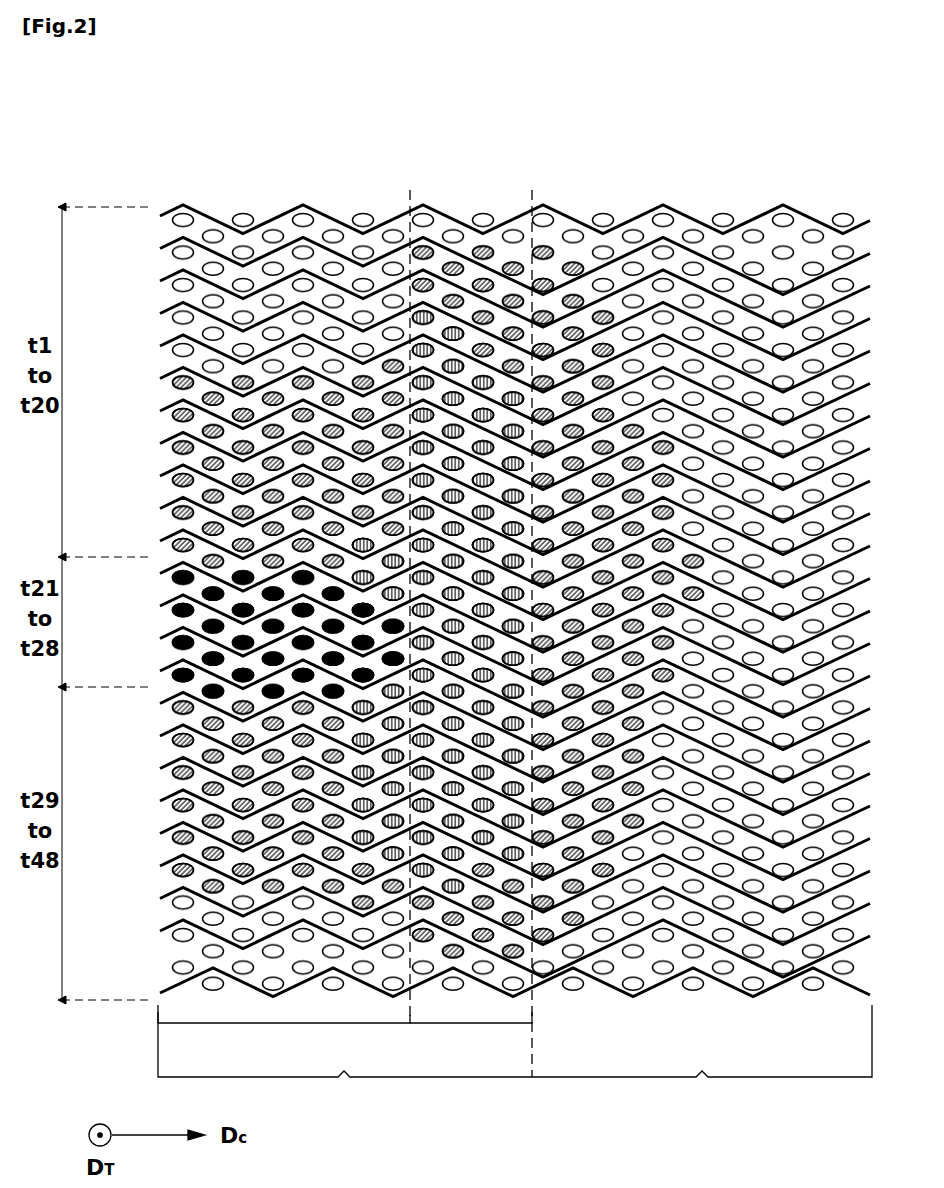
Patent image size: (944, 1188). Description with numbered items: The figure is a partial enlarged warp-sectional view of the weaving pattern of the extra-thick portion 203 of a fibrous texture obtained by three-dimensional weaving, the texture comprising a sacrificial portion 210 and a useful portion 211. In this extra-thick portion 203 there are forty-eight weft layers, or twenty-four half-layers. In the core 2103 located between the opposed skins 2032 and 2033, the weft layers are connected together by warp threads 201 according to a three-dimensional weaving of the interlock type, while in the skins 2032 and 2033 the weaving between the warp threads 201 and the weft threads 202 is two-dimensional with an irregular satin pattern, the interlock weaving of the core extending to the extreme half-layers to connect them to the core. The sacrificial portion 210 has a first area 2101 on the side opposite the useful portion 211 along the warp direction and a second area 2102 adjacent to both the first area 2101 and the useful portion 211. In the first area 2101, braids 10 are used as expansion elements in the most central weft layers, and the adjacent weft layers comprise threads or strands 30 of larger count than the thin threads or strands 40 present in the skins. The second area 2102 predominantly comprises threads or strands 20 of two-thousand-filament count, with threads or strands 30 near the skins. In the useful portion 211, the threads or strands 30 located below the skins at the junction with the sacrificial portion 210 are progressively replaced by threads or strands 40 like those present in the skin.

The extra-thick portion 203 is at (486, 557).
The skin 2032 is at (688, 221).
The skin 2033 is at (662, 982).
The warp threads 201 is at (163, 217).
The weft threads 202 is at (471, 590).
The threads or strands 30 is at (170, 507).
The threads or strands 20 is at (583, 859).
The braids 10 is at (168, 672).
The threads or strands 40 is at (180, 902).
The core 2103 is at (246, 634).
The first area 2101 is at (284, 620).
The second area 2102 is at (471, 633).
The sacrificial portion 210 is at (345, 1057).
The useful portion 211 is at (702, 1057).